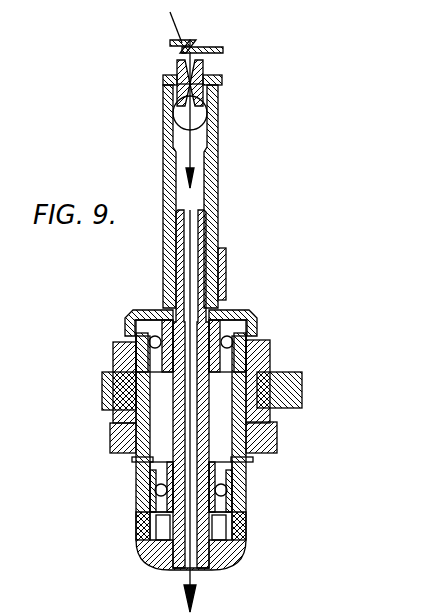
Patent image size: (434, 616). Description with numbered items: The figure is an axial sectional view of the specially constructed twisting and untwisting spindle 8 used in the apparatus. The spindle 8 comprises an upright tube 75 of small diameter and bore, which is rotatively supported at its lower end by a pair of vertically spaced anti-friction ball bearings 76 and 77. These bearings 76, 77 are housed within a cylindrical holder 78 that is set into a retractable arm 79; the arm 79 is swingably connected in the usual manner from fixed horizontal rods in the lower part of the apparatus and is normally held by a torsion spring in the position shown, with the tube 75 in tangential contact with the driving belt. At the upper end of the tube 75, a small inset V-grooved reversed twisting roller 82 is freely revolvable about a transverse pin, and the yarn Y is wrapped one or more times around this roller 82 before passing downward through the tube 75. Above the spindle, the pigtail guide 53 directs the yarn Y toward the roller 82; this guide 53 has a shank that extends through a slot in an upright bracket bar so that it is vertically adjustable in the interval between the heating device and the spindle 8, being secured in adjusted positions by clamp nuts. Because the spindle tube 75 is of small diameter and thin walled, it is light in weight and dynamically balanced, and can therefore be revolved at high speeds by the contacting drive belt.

The yarn Y is at (163, 21).
The pigtail guide 53 is at (210, 50).
The reversed twisting roller 82 is at (178, 68).
The upright tube 75 is at (213, 150).
The anti-friction ball bearing 76 is at (132, 334).
The spindle 8 is at (270, 327).
The retractable arm 79 is at (302, 399).
The cylindrical holder 78 is at (258, 468).
The anti-friction ball bearing 77 is at (152, 486).